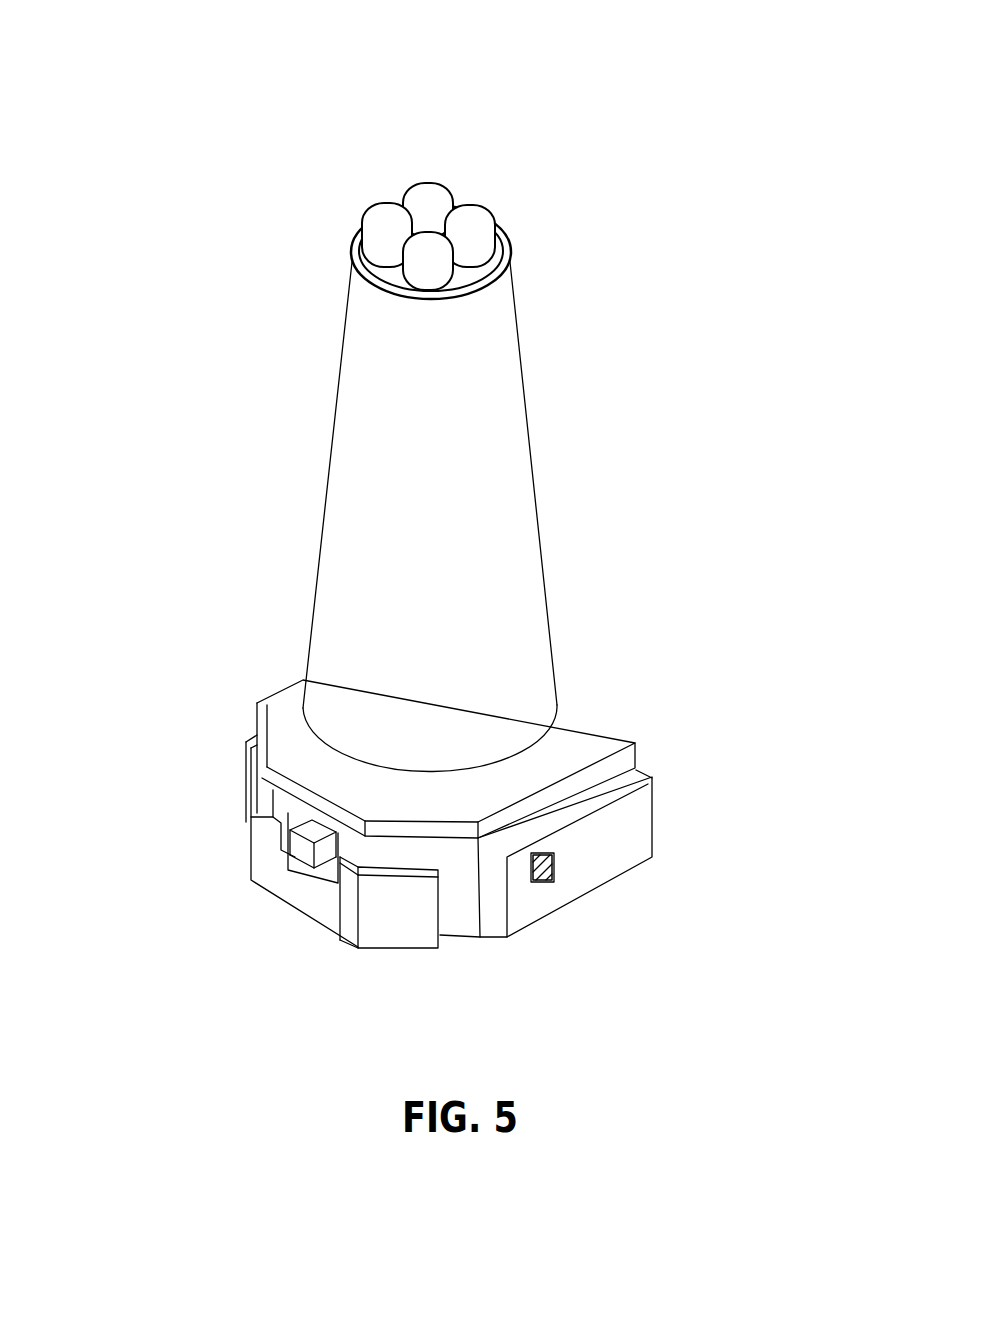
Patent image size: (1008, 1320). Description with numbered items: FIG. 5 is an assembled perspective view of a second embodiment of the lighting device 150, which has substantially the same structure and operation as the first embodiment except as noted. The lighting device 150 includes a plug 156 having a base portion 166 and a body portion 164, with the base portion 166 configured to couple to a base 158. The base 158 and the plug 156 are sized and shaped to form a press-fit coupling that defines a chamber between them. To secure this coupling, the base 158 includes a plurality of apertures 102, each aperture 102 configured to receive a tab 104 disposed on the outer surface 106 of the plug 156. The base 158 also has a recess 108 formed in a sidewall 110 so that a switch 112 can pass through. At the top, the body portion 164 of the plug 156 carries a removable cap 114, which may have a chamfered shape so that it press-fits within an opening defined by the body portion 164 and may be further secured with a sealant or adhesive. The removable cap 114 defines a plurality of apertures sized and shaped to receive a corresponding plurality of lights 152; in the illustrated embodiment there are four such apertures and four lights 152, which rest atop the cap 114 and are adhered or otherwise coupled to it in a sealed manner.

The aperture 102 is at (565, 860).
The tab 104 is at (540, 877).
The outer surface 106 is at (492, 880).
The recess 108 is at (303, 885).
The sidewall 110 is at (262, 870).
The switch 112 is at (313, 852).
The removable cap 114 is at (465, 277).
The lighting device 150 is at (712, 188).
The light 152 is at (397, 178).
The plug 156 is at (293, 343).
The base 158 is at (637, 898).
The body portion 164 is at (487, 432).
The base portion 166 is at (578, 742).